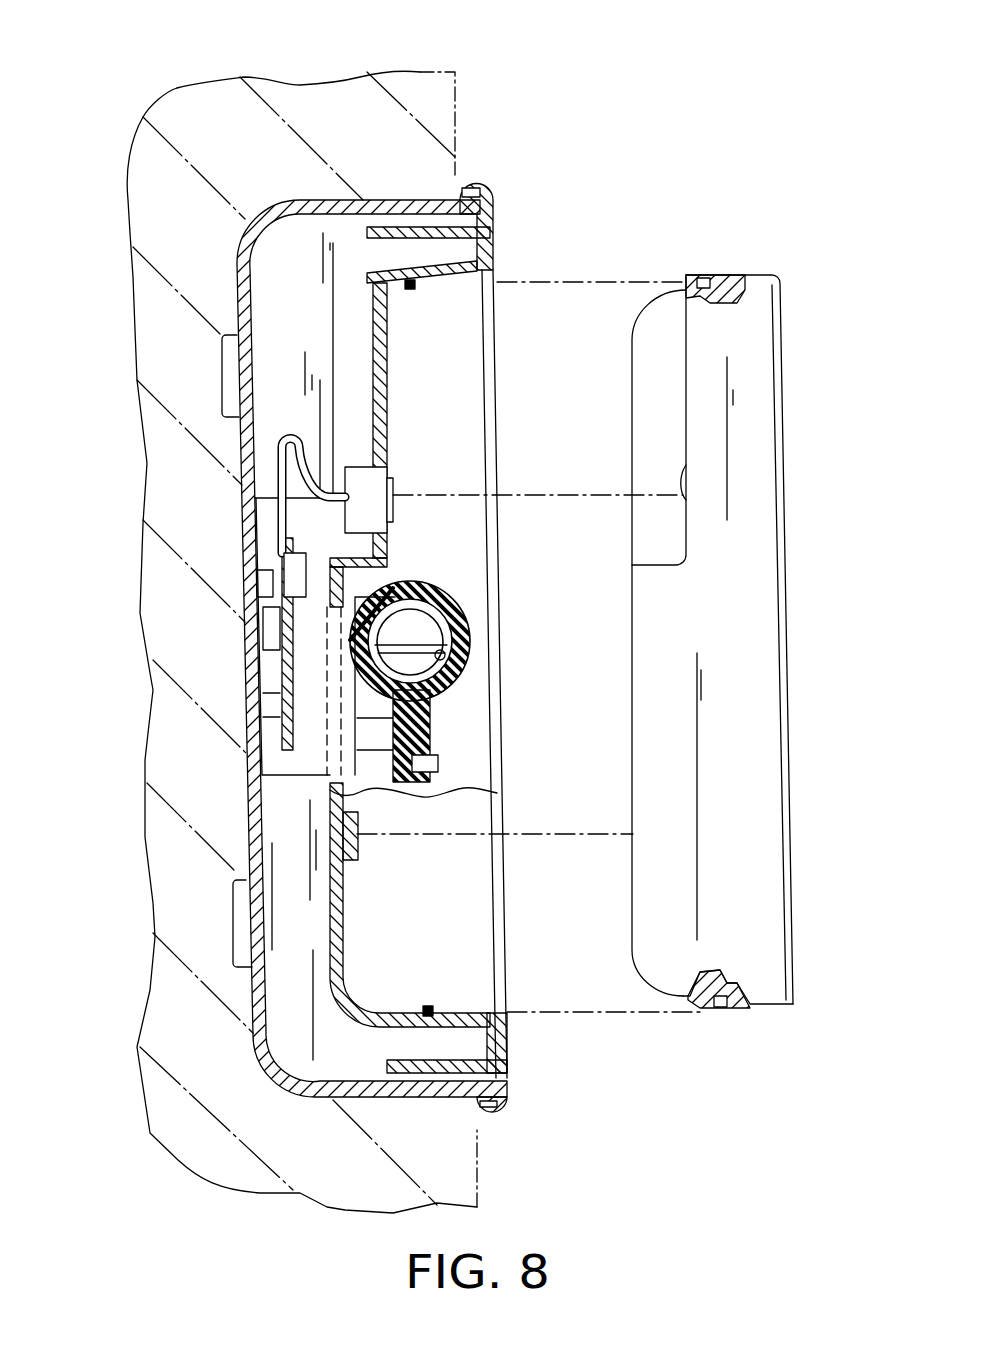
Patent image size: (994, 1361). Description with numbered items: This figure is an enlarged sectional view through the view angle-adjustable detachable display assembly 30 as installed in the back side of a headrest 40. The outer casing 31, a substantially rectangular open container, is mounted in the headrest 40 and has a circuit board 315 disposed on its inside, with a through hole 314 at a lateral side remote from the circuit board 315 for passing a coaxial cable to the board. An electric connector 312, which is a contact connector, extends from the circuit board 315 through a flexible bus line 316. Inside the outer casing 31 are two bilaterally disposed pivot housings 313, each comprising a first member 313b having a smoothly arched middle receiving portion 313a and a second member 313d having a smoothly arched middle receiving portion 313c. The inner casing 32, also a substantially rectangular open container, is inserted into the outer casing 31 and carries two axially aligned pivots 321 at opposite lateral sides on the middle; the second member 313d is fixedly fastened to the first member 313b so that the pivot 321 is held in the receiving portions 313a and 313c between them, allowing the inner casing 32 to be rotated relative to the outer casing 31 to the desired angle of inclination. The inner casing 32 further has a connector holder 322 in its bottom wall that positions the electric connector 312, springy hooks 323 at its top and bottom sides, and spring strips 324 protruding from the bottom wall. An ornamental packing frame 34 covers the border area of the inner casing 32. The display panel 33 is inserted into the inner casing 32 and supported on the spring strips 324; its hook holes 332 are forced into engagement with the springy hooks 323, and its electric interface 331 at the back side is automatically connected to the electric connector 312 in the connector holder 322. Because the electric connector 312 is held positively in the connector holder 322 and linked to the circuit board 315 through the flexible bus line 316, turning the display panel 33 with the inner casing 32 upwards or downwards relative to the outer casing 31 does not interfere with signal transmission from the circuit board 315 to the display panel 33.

The view angle-adjustable detachable display assembly 30 is at (775, 50).
The outer casing 31 is at (383, 197).
The electric connector 312 is at (370, 500).
The pivot housing 313 is at (490, 674).
The smoothly arched middle receiving portion 313a is at (427, 700).
The first member 313b is at (435, 735).
The smoothly arched middle receiving portion 313c is at (422, 640).
The second member 313d is at (445, 690).
The through hole 314 is at (270, 752).
The circuit board 315 is at (260, 672).
The flexible bus line 316 is at (278, 462).
The inner casing 32 is at (447, 644).
The pivot 321 is at (470, 610).
The connector holder 322 is at (383, 455).
The springy hook 323 is at (413, 285).
The spring strip 324 is at (358, 853).
The display panel 33 is at (718, 650).
The electric interface 331 is at (684, 478).
The hook hole 332 is at (709, 273).
The ornamental packing frame 34 is at (490, 253).
The headrest 40 is at (312, 112).